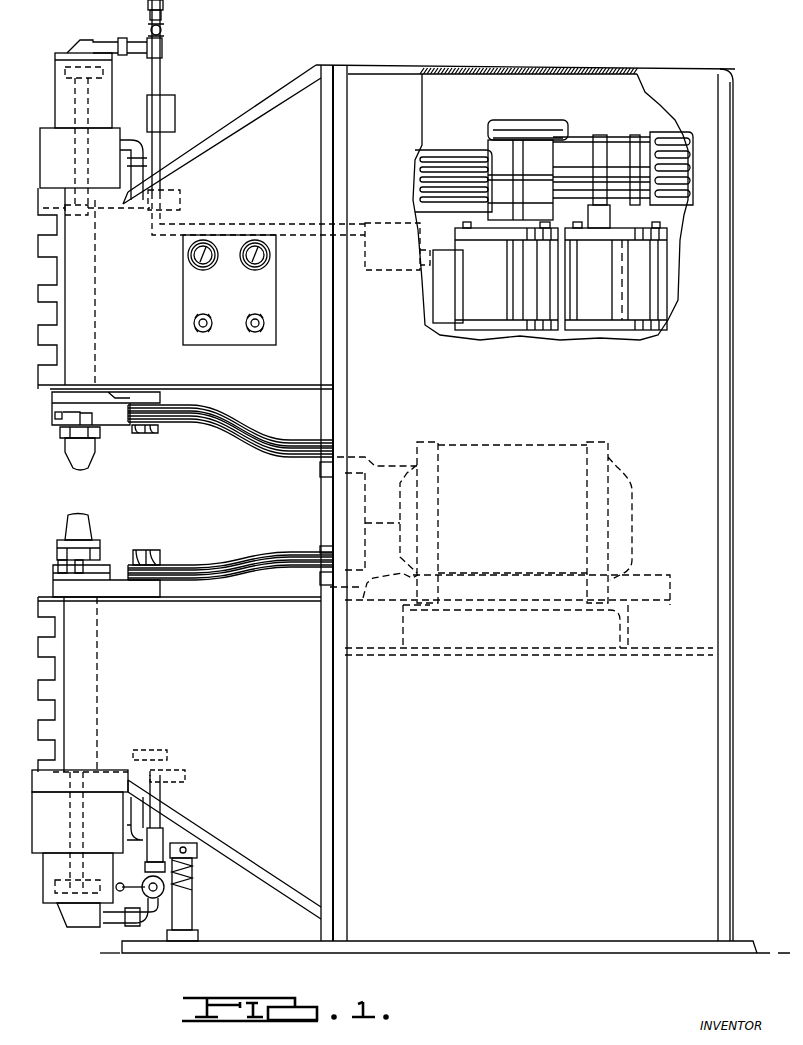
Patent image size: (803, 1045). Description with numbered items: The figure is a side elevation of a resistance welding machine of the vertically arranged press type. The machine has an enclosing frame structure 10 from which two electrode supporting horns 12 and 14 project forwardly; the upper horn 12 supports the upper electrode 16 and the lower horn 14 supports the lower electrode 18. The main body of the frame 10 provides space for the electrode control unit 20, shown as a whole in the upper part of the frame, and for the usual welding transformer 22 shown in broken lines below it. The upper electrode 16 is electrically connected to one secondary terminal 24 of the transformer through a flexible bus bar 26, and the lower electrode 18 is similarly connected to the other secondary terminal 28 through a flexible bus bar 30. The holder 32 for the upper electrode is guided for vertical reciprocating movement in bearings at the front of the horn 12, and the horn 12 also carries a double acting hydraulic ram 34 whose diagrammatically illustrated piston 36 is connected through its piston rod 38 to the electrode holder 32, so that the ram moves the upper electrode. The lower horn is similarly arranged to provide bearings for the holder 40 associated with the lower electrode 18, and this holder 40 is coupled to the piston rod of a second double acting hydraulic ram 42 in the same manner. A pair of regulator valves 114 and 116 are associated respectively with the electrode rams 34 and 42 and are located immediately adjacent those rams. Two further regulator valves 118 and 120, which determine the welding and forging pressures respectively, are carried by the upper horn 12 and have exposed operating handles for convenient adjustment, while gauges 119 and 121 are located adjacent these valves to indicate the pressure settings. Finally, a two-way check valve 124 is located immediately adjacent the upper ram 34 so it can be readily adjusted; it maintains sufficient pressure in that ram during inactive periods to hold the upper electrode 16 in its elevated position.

The enclosing frame structure 10 is at (685, 73).
The upper electrode supporting horn 12 is at (274, 100).
The lower electrode supporting horn 14 is at (190, 666).
The upper electrode 16 is at (95, 464).
The lower electrode 18 is at (92, 525).
The electrode control unit 20 is at (592, 128).
The welding transformer 22 is at (540, 448).
The secondary terminal 24 is at (370, 452).
The flexible bus bar 26 is at (282, 460).
The secondary terminal 28 is at (362, 587).
The flexible bus bar 30 is at (248, 580).
The electrode holder 32 is at (55, 413).
The double acting hydraulic ram 34 is at (49, 109).
The piston 36 is at (55, 98).
The piston rod 38 is at (90, 108).
The electrode holder 40 is at (55, 565).
The double acting hydraulic ram 42 is at (55, 845).
The regulator valve 114 is at (170, 100).
The regulator valve 116 is at (160, 843).
The regulator valve 118 is at (203, 334).
The gauge 119 is at (207, 241).
The regulator valve 120 is at (264, 332).
The gauge 121 is at (258, 241).
The two-way check valve 124 is at (375, 272).